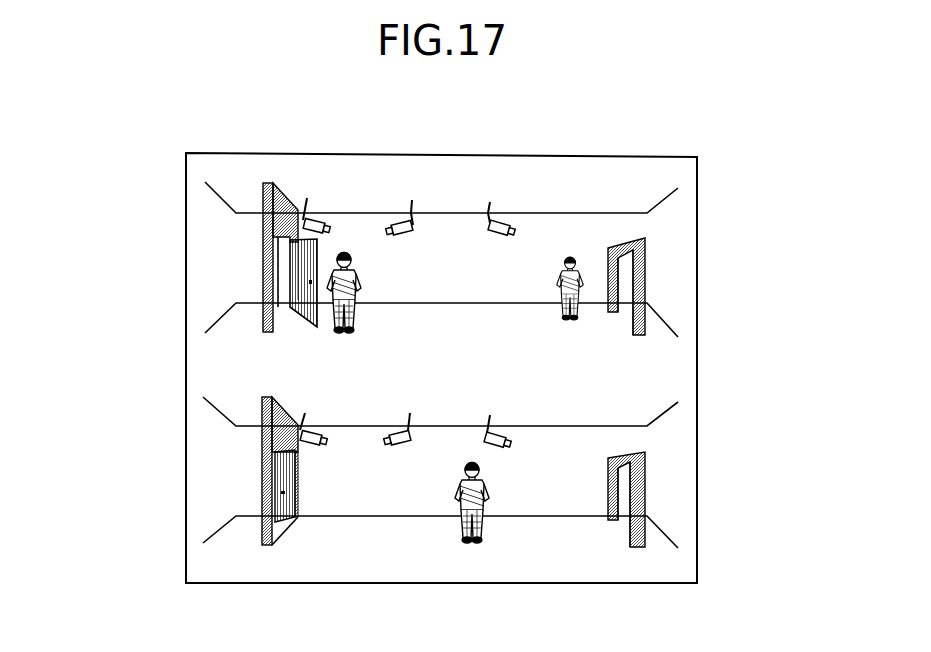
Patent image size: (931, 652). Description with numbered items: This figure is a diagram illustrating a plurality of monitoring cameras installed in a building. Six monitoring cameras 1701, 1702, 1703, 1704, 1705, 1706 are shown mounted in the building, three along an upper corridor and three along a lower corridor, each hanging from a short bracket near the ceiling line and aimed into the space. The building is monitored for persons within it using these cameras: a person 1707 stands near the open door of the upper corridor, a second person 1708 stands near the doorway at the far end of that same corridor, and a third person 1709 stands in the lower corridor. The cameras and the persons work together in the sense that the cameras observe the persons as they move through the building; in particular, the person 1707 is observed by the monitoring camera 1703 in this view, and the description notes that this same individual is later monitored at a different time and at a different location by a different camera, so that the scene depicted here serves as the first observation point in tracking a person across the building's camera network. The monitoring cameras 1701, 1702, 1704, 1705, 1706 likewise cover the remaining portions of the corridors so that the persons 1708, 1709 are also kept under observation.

The monitoring camera 1701 is at (327, 210).
The monitoring camera 1702 is at (393, 208).
The monitoring camera 1703 is at (513, 213).
The monitoring camera 1704 is at (327, 452).
The monitoring camera 1705 is at (408, 448).
The monitoring camera 1706 is at (515, 445).
The person 1707 is at (327, 268).
The person 1708 is at (592, 280).
The person 1709 is at (493, 508).